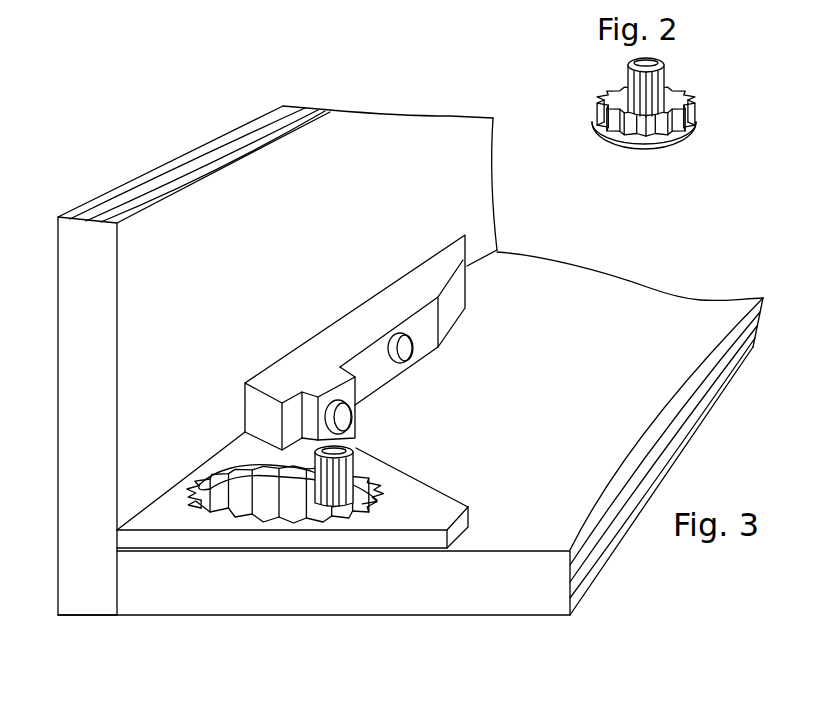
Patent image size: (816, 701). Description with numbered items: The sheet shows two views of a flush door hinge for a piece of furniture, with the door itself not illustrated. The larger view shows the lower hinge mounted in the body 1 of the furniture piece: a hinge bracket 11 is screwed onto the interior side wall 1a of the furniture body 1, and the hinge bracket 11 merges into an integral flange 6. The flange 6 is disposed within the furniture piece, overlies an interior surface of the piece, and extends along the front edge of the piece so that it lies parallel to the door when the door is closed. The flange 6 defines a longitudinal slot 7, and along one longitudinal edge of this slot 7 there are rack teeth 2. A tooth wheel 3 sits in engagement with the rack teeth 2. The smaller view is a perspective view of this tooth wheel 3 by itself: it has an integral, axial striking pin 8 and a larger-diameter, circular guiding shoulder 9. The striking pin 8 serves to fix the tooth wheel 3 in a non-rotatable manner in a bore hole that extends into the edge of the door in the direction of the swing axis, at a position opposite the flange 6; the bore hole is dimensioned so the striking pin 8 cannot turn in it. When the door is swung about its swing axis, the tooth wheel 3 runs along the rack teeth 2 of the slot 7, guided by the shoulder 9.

In FIG. 3, the body 1 is at (600, 382).
In FIG. 3, the interior side wall 1a is at (104, 347).
In FIG. 3, the rack teeth 2 is at (243, 510).
In FIG. 3, the tooth wheel 3 is at (370, 467).
In FIG. 2, the tooth wheel 3 is at (649, 105).
In FIG. 3, the flange 6 is at (424, 502).
In FIG. 3, the longitudinal slot 7 is at (220, 474).
In FIG. 3, the striking pin 8 is at (358, 468).
In FIG. 2, the striking pin 8 is at (628, 80).
In FIG. 2, the circular guiding shoulder 9 is at (691, 132).
In FIG. 3, the hinge bracket 11 is at (400, 278).